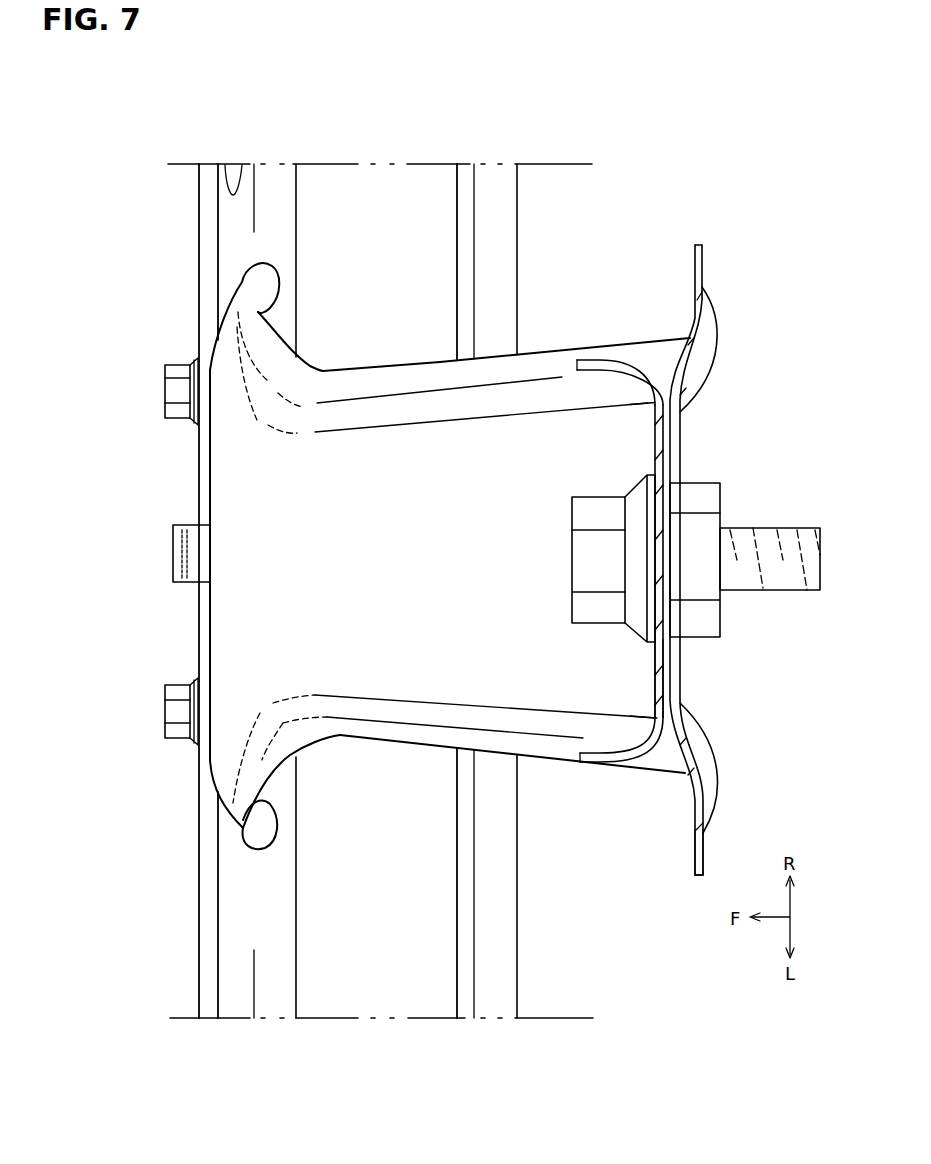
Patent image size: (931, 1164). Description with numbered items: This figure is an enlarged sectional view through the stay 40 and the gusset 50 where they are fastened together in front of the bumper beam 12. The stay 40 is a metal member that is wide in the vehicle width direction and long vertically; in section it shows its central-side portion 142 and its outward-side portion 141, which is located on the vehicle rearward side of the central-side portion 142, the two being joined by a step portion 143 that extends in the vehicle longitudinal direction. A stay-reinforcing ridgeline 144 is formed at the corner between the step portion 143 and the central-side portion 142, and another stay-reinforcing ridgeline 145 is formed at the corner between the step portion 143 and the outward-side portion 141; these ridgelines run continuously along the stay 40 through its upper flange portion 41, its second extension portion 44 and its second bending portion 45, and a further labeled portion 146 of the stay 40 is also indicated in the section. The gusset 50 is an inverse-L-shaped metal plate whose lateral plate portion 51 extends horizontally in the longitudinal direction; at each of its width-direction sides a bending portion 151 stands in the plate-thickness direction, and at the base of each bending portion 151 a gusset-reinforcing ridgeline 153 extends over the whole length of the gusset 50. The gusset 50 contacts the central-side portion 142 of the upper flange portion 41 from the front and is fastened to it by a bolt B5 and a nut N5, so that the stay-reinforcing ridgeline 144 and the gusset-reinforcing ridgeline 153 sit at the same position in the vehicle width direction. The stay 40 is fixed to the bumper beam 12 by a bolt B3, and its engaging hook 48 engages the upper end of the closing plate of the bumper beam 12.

The bumper beam 12 is at (194, 885).
The stay 40 is at (645, 338).
The upper flange portion 41 is at (703, 847).
The second extension portion 44 is at (453, 750).
The second bending portion 45 is at (210, 618).
The engaging hook 48 is at (173, 552).
The gusset 50 is at (654, 437).
The lateral plate portion 51 is at (653, 687).
The bolt B3 is at (163, 390).
The bolt B5 is at (572, 603).
The nut N5 is at (722, 522).
The outward-side portion 141 is at (368, 382).
The central-side portion 142 is at (317, 450).
The step portion 143 is at (413, 713).
The stay-reinforcing ridgeline 144 is at (502, 410).
The stay-reinforcing ridgeline 145 is at (545, 378).
The horn top wall 146 is at (412, 362).
The bending portion 151 is at (610, 358).
The gusset-reinforcing ridgeline 153 is at (648, 405).